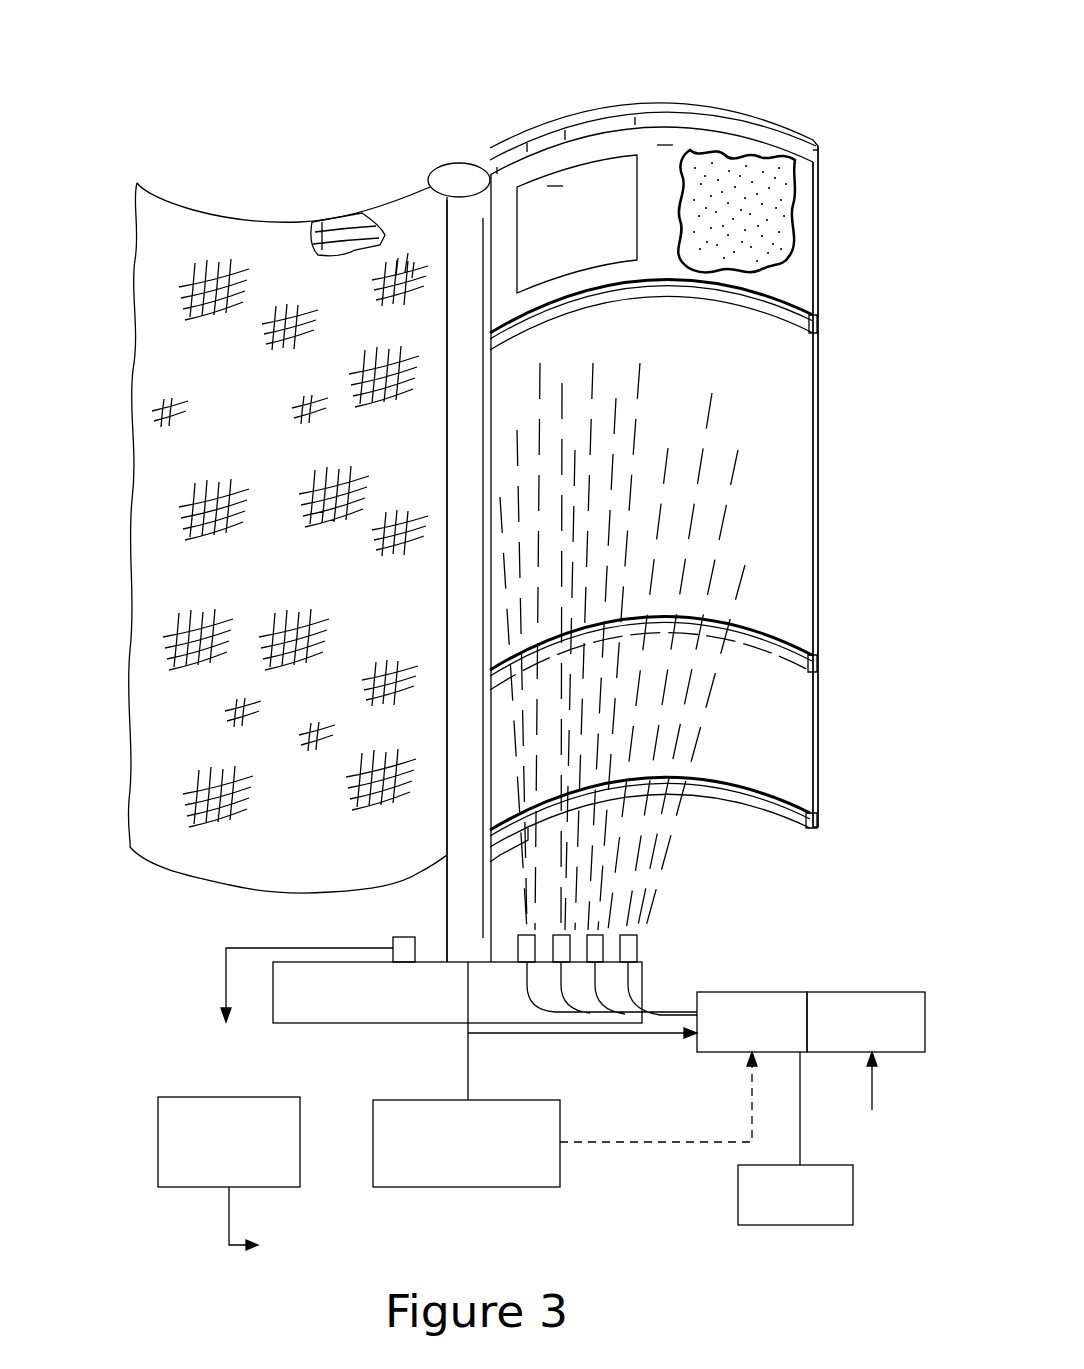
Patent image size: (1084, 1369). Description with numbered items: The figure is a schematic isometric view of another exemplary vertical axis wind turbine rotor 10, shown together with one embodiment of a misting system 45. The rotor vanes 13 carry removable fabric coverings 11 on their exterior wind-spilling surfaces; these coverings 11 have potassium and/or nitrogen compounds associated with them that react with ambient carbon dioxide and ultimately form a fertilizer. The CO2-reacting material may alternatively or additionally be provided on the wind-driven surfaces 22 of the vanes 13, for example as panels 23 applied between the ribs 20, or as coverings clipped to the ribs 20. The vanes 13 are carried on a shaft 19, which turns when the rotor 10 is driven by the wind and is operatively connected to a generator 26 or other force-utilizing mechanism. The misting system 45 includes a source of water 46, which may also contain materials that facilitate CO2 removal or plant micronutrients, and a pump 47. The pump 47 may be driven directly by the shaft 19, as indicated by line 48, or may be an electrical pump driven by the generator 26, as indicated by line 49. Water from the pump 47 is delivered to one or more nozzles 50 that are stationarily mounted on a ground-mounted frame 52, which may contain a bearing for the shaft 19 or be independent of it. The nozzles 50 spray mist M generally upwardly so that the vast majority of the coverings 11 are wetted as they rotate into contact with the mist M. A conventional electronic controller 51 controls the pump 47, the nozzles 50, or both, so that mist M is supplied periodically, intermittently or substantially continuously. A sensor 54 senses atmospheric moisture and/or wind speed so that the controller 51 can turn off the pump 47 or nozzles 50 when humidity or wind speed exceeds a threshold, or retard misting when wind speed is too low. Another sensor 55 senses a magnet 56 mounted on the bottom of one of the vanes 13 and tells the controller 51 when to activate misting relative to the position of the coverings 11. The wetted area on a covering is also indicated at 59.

The vertical axis wind turbine rotor 10 is at (822, 100).
The removable coverings 11 is at (820, 172).
The rotor vanes 13 is at (820, 183).
The shaft 19 is at (471, 672).
The ribs 20 is at (610, 113).
The wind-driven surfaces 22 is at (665, 145).
The panels 23 is at (555, 186).
The generator 26 is at (560, 1113).
The misting system 45 is at (918, 845).
The source of water 46 is at (808, 1217).
The pump 47 is at (733, 992).
The line 48 is at (605, 1035).
The line 49 is at (612, 1142).
The nozzles 50 is at (653, 923).
The electronic controller 51 is at (867, 992).
The frame 52 is at (438, 1012).
The sensor 54 is at (158, 1143).
The sensor 55 is at (400, 937).
The magnet 56 is at (490, 862).
The mist-wetted patch 59 is at (757, 242).
The mist M is at (707, 435).